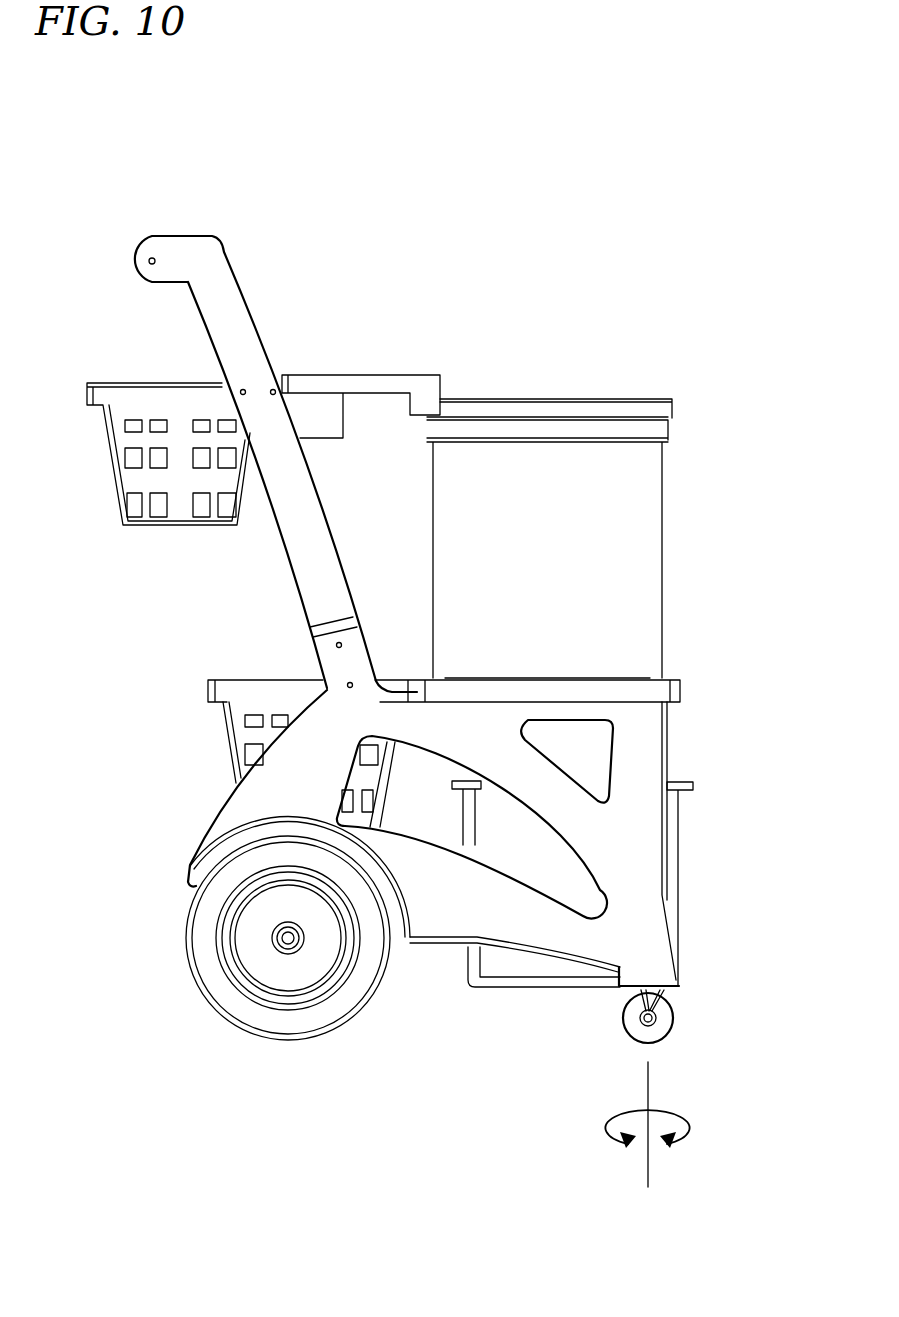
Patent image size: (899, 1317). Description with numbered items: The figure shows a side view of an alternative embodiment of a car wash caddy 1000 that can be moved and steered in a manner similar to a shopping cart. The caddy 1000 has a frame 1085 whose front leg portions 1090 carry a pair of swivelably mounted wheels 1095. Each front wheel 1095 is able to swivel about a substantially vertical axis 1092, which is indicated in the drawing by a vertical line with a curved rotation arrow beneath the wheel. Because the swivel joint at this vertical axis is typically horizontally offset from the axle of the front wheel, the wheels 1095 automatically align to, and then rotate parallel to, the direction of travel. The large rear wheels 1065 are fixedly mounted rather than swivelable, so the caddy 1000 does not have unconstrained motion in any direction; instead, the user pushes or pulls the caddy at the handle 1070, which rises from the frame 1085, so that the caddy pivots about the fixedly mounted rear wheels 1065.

The car wash caddy 1000 is at (458, 179).
The handle 1070 is at (235, 346).
The frame 1085 is at (637, 840).
The rear wheels 1065 is at (298, 1022).
The front leg portions 1090 is at (648, 973).
The swivelably mounted wheels 1095 is at (663, 1020).
The vertical axis 1092 is at (648, 1140).